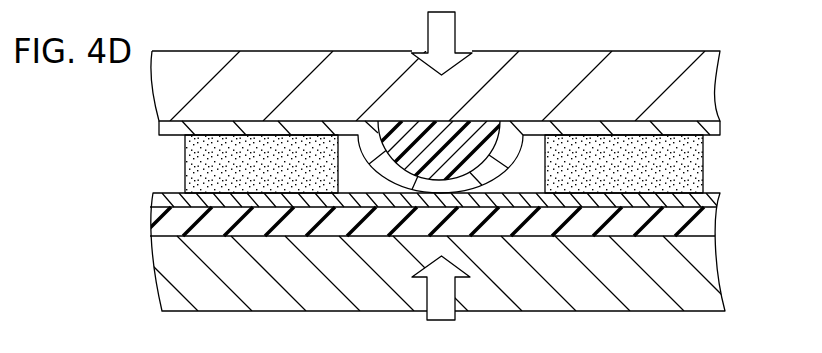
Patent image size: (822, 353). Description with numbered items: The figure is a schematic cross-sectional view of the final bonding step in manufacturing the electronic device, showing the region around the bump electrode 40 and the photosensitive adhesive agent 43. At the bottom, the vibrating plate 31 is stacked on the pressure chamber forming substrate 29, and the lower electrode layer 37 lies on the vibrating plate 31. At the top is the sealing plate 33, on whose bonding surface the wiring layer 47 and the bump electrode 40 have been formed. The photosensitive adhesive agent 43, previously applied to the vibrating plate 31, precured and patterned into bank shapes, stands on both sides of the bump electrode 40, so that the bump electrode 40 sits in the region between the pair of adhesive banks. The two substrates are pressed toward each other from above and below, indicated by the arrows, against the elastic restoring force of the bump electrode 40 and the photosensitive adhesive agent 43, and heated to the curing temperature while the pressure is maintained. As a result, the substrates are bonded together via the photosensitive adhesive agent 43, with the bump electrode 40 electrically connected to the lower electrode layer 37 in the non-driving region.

The pressure chamber forming substrate 29 is at (707, 268).
The vibrating plate 31 is at (707, 224).
The sealing plate 33 is at (707, 75).
The lower electrode layer 37 is at (705, 201).
The bump electrode 40 is at (455, 146).
The photosensitive adhesive agent 43 is at (217, 162).
The wiring layer 47 is at (707, 128).